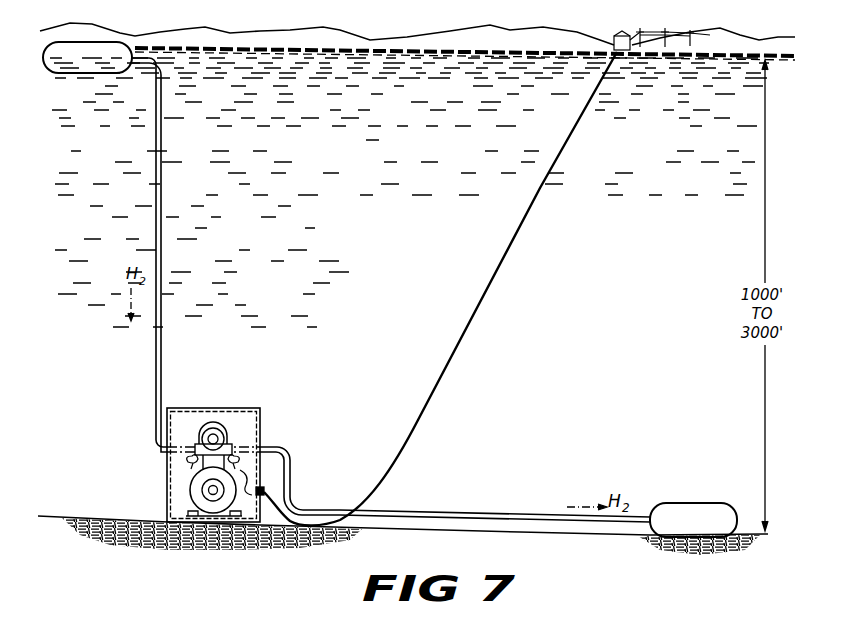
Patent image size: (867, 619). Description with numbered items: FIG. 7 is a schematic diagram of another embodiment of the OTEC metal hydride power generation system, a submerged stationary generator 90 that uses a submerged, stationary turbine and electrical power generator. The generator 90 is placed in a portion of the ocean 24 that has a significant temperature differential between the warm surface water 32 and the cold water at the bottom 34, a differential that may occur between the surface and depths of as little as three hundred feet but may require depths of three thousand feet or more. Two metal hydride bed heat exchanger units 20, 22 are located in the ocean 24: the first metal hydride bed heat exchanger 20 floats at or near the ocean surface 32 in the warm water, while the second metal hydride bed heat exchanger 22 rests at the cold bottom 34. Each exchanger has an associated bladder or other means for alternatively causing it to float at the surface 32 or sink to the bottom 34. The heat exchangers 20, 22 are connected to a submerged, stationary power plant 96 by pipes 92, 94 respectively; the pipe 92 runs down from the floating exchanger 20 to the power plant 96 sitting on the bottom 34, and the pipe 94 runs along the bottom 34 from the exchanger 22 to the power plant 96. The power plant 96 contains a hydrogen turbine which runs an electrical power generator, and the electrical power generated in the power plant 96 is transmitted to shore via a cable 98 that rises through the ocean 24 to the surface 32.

The metal hydride bed heat exchanger unit 20 is at (103, 64).
The metal hydride bed heat exchanger unit 22 is at (678, 506).
The ocean 24 is at (421, 240).
The surface water 32 is at (397, 50).
The bottom 34 is at (126, 518).
The submerged stationary generator 90 is at (296, 392).
The pipe 92 is at (154, 369).
The pipe 94 is at (532, 512).
The submerged stationary power plant 96 is at (225, 408).
The cable 98 is at (452, 366).